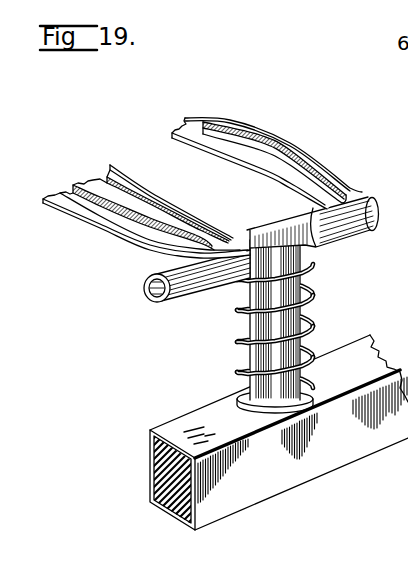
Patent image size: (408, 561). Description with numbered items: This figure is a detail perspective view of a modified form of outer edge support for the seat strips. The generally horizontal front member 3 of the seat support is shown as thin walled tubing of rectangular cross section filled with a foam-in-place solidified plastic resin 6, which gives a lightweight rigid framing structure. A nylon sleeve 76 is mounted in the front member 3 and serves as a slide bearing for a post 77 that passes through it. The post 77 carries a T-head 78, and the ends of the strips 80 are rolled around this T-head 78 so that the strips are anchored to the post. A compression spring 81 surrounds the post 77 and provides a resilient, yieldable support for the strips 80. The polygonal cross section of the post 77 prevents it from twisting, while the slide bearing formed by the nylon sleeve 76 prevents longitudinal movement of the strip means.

The generally horizontal portion 3 is at (278, 468).
The foam-in-place solidified plastic resin 6 is at (162, 470).
The nylon sleeve 76 is at (302, 391).
The post 77 is at (304, 352).
The T-head 78 is at (178, 302).
The strips 80 is at (207, 199).
The compression spring 81 is at (325, 296).